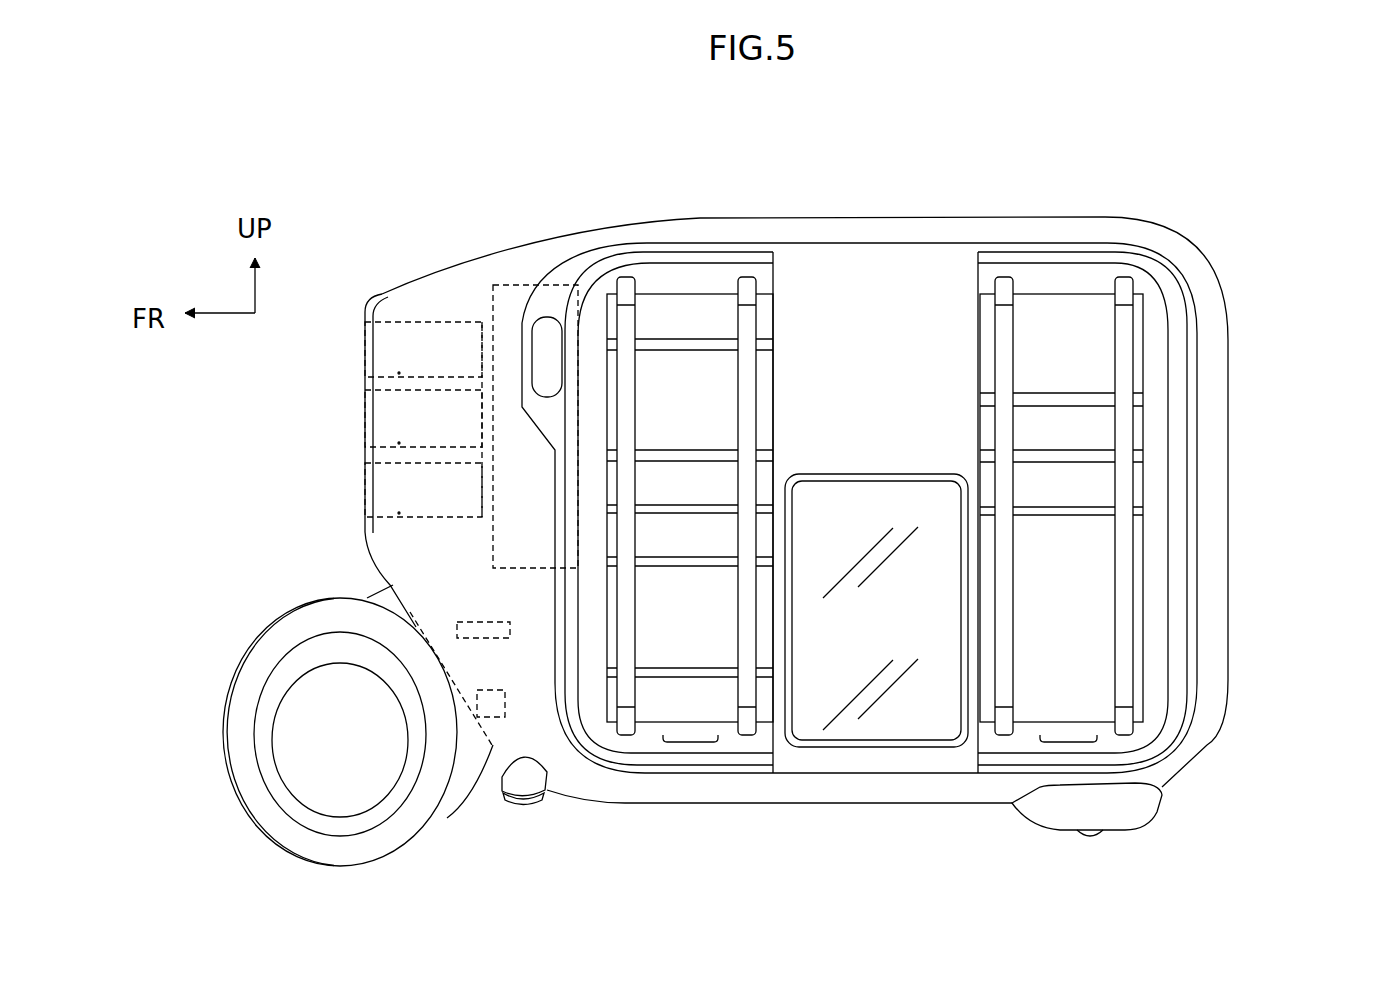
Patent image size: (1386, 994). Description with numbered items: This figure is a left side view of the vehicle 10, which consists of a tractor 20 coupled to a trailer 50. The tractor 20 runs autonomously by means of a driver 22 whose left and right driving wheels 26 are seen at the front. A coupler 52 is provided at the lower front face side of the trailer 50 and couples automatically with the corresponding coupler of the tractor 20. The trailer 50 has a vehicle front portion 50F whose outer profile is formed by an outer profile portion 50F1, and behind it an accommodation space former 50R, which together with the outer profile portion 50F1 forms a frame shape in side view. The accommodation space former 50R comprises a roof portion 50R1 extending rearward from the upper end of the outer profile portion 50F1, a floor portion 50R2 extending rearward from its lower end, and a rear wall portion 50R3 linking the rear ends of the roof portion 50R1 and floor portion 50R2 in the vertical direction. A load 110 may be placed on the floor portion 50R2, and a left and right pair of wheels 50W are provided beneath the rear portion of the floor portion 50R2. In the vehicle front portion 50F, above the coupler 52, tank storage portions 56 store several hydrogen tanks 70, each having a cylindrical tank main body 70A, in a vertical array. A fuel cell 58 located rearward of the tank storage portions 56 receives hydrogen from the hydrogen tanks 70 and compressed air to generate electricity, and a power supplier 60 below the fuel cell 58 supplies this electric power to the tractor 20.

The vehicle 10 is at (326, 186).
The tractor 20 is at (272, 597).
The driver 22 is at (420, 824).
The driving wheels 26 is at (368, 852).
The trailer 50 is at (752, 178).
The vehicle front portion 50F is at (472, 222).
The outer profile portion 50F1 is at (408, 298).
The accommodation space former 50R is at (894, 207).
The roof portion 50R1 is at (942, 224).
The floor portion 50R2 is at (875, 797).
The rear wall portion 50R3 is at (1217, 483).
The wheels 50W is at (1090, 838).
The coupler 52 is at (506, 715).
The tank storage portions 56 is at (398, 371).
The fuel cell 58 is at (525, 285).
The power supplier 60 is at (480, 619).
The hydrogen tanks 70 is at (393, 343).
The tank main body 70A is at (428, 338).
The load 110 is at (697, 705).